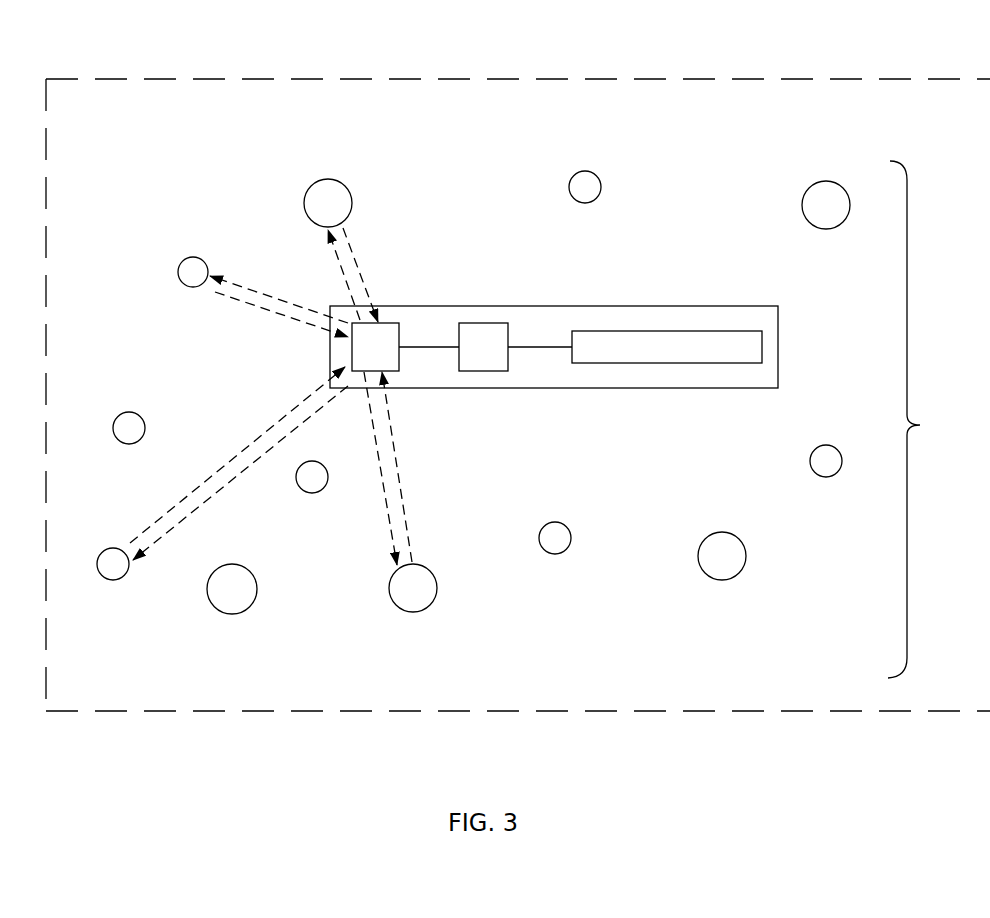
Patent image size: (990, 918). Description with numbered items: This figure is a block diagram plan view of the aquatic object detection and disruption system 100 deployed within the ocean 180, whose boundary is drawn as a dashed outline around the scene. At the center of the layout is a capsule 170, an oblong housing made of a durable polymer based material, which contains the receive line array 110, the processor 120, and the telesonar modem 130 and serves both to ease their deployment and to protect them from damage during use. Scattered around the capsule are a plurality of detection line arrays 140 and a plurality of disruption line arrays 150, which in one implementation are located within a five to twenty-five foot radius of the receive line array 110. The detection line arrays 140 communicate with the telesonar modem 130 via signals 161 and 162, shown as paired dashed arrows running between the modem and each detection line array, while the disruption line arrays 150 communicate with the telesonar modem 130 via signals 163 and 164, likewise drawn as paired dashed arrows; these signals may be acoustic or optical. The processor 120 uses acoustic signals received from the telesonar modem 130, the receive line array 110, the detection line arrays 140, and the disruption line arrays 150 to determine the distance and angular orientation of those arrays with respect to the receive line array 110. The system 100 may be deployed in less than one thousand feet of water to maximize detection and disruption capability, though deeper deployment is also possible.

The aquatic object detection and disruption system 100 is at (929, 419).
The receive line array 110 is at (637, 363).
The processor 120 is at (480, 371).
The telesonar modem 130 is at (403, 357).
The detection line arrays 140 is at (178, 272).
The disruption line arrays 150 is at (353, 203).
The signal 161 is at (240, 272).
The signal 162 is at (263, 320).
The signal 163 is at (332, 282).
The signal 164 is at (368, 288).
The capsule 170 is at (705, 388).
The ocean 180 is at (822, 79).